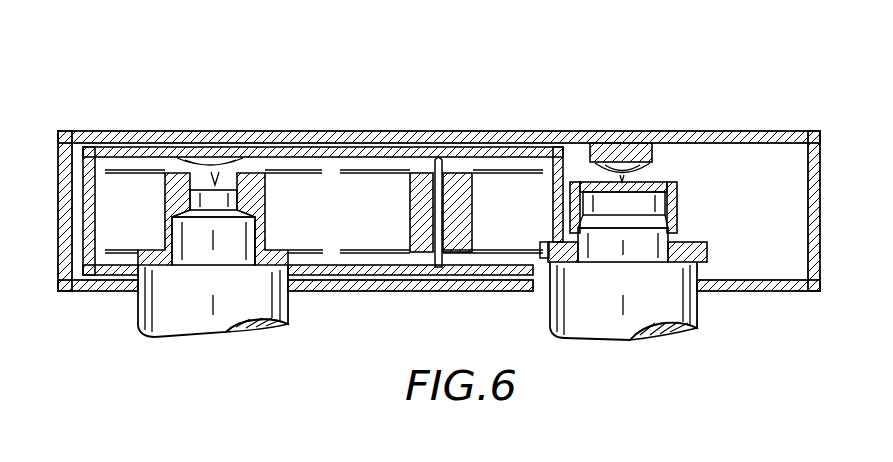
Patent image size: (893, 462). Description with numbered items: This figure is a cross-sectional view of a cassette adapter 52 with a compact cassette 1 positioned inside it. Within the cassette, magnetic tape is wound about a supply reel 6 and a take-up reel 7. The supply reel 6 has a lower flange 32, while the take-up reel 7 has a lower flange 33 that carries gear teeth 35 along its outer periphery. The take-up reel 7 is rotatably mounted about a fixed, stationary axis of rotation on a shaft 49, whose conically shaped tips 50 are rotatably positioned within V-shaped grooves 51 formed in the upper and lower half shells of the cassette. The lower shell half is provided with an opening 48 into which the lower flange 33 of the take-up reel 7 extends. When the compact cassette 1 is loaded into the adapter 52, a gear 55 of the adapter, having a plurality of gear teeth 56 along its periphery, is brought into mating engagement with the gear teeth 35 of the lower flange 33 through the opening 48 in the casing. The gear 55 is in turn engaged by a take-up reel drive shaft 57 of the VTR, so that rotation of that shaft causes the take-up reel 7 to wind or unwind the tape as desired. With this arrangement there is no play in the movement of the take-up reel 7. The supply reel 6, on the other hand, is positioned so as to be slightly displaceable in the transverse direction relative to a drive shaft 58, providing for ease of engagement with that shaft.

The compact cassette 1 is at (263, 143).
The supply reel 6 is at (173, 170).
The take-up reel 7 is at (503, 160).
The lower flange 32 is at (105, 288).
The lower flange 33 is at (358, 293).
The gear teeth 35 is at (322, 288).
The opening 48 is at (548, 242).
The shaft 49 is at (433, 215).
The conically shaped tips 50 is at (422, 141).
The V-shaped grooves 51 is at (446, 160).
The cassette adapter 52 is at (690, 131).
The gear 55 is at (680, 195).
The gear teeth 56 is at (700, 244).
The take-up reel drive shaft 57 is at (697, 318).
The drive shaft 58 is at (165, 320).